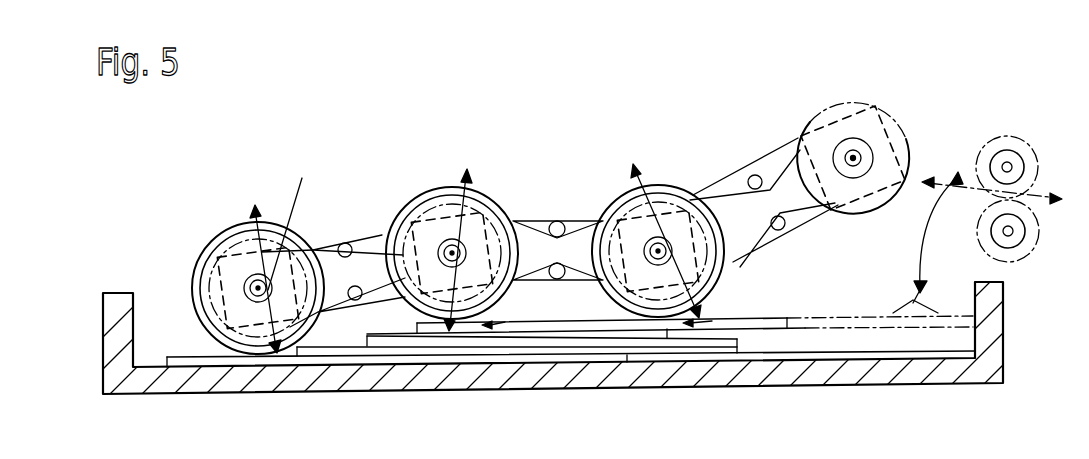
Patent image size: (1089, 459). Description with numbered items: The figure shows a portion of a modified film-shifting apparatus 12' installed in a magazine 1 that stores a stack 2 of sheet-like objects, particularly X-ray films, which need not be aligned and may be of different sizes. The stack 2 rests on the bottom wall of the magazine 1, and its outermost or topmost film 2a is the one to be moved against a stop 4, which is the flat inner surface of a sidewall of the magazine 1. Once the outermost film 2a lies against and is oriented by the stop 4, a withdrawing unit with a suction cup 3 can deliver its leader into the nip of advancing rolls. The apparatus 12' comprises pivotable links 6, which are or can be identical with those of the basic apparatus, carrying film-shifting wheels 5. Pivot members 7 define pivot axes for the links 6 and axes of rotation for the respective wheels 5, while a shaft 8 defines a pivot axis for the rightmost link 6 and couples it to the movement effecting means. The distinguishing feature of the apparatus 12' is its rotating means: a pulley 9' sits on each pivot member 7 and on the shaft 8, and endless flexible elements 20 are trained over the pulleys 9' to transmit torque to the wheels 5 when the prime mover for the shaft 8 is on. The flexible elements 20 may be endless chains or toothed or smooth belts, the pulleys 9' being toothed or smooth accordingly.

The magazine 1 is at (878, 386).
The stack 2 is at (518, 317).
The outermost film 2a is at (753, 325).
The suction cup 3 is at (963, 187).
The stop 4 is at (973, 333).
The wheel 5 is at (203, 243).
The link 6 is at (527, 220).
The pivot member 7 is at (363, 247).
The shaft 8 is at (877, 150).
The pulley 9' is at (815, 111).
The apparatus 12' is at (470, 63).
The endless flexible element 20 is at (520, 222).